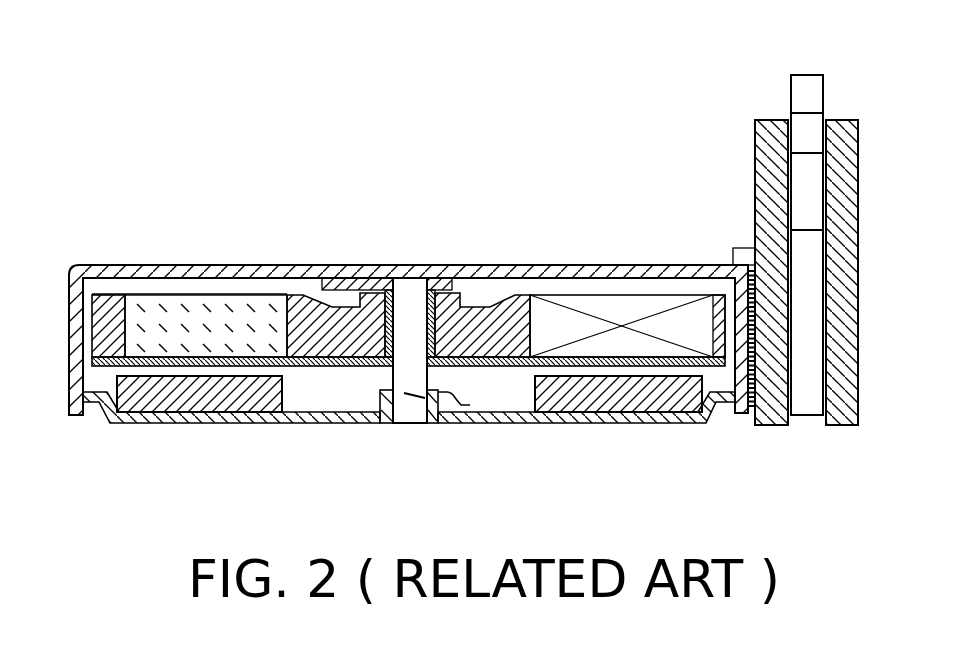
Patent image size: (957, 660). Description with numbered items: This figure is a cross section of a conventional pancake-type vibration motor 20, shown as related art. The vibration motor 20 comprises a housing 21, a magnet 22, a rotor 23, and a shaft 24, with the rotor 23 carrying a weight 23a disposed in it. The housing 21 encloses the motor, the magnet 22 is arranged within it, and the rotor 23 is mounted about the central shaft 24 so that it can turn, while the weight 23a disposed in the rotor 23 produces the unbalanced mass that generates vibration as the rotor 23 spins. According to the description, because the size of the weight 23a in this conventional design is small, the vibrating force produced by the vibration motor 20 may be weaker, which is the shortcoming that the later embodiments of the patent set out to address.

The vibration motor 20 is at (110, 40).
The housing 21 is at (162, 418).
The magnet 22 is at (632, 400).
The rotor 23 is at (100, 334).
The weight 23a is at (197, 305).
The shaft 24 is at (415, 305).